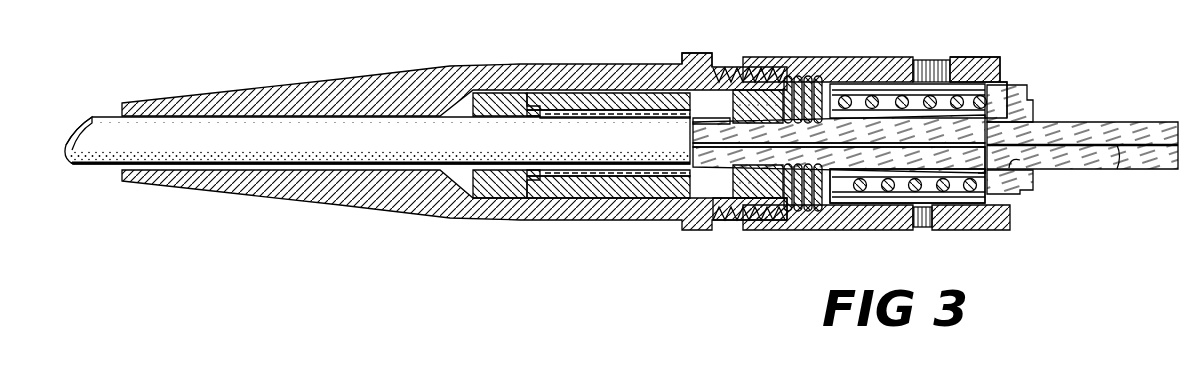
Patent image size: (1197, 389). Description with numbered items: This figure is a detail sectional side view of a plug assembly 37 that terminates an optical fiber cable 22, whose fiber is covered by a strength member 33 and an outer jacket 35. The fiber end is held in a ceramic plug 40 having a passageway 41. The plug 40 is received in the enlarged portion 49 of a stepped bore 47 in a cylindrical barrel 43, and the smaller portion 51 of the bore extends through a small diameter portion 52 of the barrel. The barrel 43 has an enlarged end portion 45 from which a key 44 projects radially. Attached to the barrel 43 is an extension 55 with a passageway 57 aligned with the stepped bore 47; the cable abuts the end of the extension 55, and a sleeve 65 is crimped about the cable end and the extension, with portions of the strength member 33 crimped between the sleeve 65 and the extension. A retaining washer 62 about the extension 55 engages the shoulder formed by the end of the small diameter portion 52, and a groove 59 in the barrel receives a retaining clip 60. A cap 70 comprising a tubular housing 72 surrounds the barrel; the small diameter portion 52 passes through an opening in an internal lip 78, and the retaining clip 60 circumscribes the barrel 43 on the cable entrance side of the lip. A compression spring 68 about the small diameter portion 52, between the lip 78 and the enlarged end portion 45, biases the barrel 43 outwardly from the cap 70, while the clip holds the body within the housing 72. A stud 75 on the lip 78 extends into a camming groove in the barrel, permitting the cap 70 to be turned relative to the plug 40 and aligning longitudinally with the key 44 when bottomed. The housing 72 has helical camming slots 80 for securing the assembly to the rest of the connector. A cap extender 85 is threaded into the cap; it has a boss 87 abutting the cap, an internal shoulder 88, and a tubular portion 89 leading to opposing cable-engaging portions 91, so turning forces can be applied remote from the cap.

The optical fiber cable 22 is at (97, 116).
The outer jacket 35 is at (77, 166).
The cable-engaging portions 91 is at (522, 112).
The tubular portion 89 is at (573, 94).
The cap extender 85 is at (620, 68).
The boss 87 is at (690, 56).
The internally disposed shoulder 88 is at (757, 92).
The retaining washer 62 is at (800, 80).
The retaining clip 60 is at (835, 98).
The plug assembly 37 is at (860, 50).
The compression spring 68 is at (876, 98).
The tubular housing 72 is at (912, 72).
The cap 70 is at (976, 56).
The key 44 is at (1009, 78).
The barrel 43 is at (1037, 98).
The plug 40 is at (1101, 122).
The stud 75 is at (828, 115).
The groove 59 is at (822, 150).
The smaller portion 51 is at (910, 152).
The stepped bore 47 is at (977, 152).
The enlarged portion 49 is at (1024, 163).
The passageway 41 is at (1118, 168).
The enlarged end portion 45 is at (1024, 192).
The camming slots 80 is at (940, 212).
The small diameter portion 52 is at (876, 204).
The lip 78 is at (827, 200).
The passageway 57 is at (766, 200).
The extension 55 is at (734, 216).
The strength member 33 is at (690, 210).
The sleeve 65 is at (710, 117).